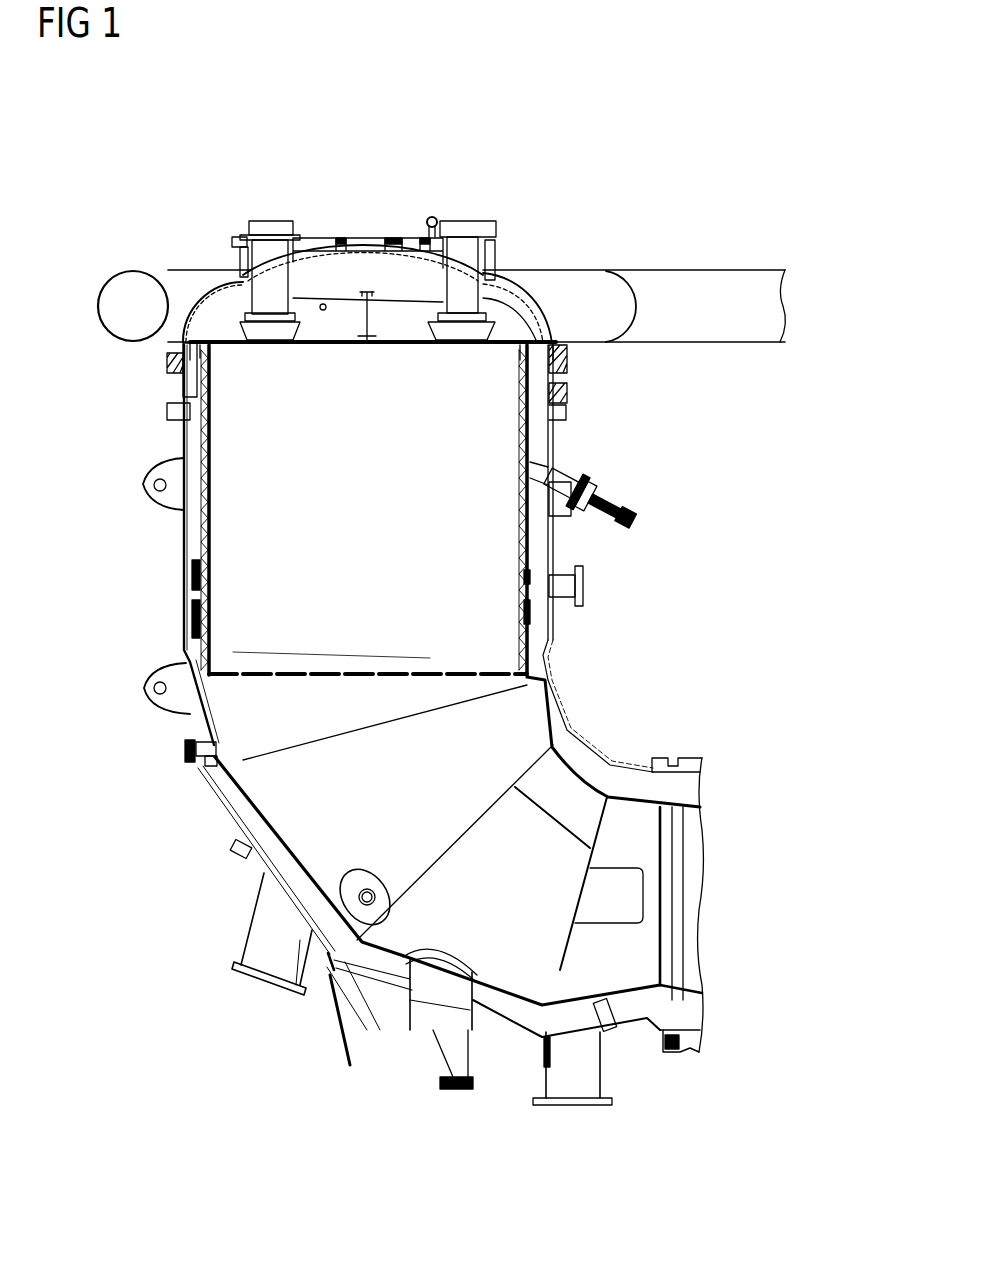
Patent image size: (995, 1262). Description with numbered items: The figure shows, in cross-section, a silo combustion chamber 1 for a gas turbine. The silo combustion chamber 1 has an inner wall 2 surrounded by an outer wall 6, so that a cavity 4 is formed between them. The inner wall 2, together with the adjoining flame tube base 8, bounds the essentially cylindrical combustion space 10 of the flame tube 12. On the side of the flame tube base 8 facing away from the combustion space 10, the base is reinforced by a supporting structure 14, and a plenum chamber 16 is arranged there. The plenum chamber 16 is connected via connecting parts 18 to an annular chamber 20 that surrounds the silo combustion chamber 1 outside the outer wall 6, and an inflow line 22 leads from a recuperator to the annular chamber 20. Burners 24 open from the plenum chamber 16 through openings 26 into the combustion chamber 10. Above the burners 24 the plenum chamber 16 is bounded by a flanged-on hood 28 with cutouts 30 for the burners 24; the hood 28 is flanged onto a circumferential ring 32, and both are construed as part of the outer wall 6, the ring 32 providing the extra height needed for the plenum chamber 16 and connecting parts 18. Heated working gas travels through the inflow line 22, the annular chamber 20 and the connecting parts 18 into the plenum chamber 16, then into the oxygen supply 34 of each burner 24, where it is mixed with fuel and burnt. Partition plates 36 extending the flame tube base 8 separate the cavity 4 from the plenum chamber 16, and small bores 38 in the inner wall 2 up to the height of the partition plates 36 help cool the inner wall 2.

The silo combustion chamber 1 is at (258, 128).
The inner wall 2 is at (202, 538).
The cavity 4 is at (557, 659).
The outer wall 6 is at (184, 618).
The flame tube base 8 is at (538, 318).
The combustion space 10 is at (392, 365).
The flame tube 12 is at (247, 735).
The supporting structure 14 is at (334, 293).
The plenum chamber 16 is at (313, 270).
The connecting parts 18 is at (180, 282).
The annular chamber 20 is at (118, 298).
The inflow line 22 is at (722, 282).
The burners 24 is at (460, 250).
The openings 26 is at (456, 346).
The hood 28 is at (232, 276).
The cutouts 30 is at (243, 228).
The ring 32 is at (562, 387).
The oxygen supply 34 is at (508, 325).
The partition plates 36 is at (577, 341).
The small bores 38 is at (215, 420).